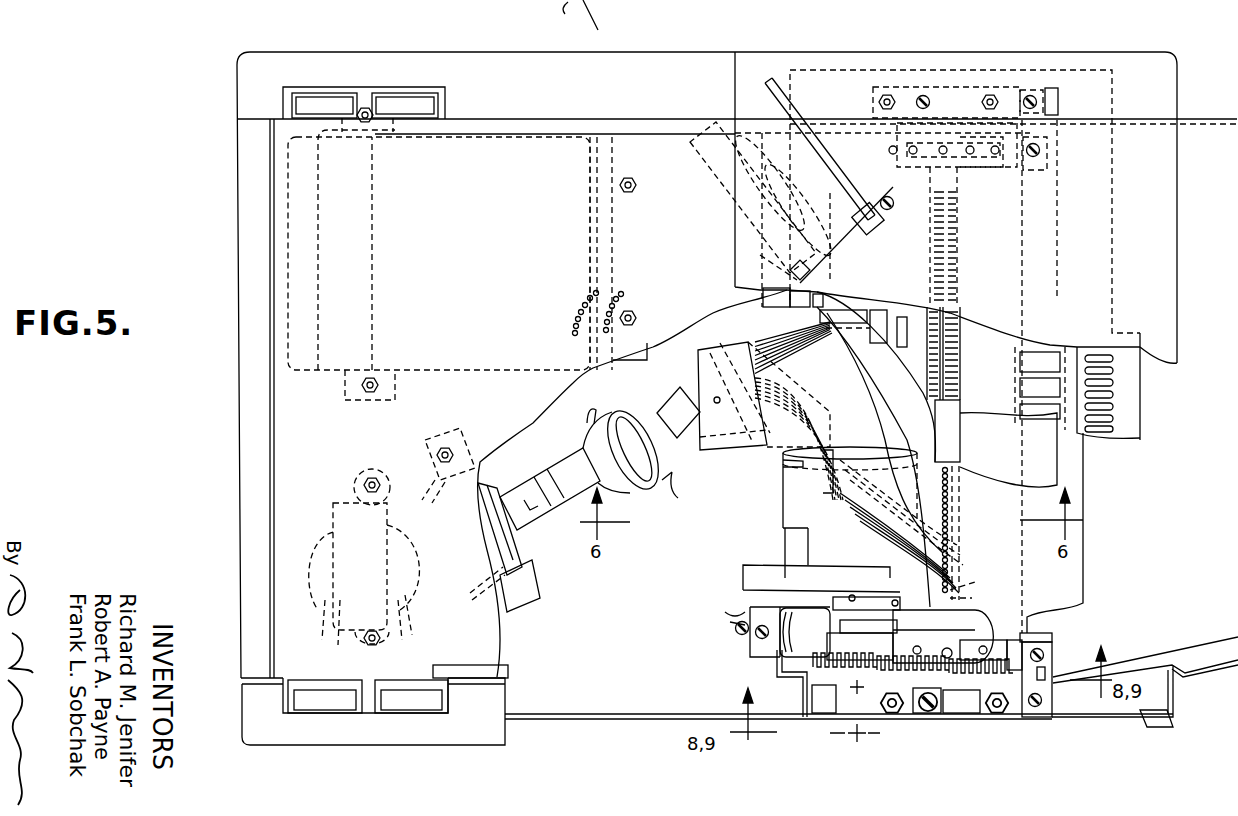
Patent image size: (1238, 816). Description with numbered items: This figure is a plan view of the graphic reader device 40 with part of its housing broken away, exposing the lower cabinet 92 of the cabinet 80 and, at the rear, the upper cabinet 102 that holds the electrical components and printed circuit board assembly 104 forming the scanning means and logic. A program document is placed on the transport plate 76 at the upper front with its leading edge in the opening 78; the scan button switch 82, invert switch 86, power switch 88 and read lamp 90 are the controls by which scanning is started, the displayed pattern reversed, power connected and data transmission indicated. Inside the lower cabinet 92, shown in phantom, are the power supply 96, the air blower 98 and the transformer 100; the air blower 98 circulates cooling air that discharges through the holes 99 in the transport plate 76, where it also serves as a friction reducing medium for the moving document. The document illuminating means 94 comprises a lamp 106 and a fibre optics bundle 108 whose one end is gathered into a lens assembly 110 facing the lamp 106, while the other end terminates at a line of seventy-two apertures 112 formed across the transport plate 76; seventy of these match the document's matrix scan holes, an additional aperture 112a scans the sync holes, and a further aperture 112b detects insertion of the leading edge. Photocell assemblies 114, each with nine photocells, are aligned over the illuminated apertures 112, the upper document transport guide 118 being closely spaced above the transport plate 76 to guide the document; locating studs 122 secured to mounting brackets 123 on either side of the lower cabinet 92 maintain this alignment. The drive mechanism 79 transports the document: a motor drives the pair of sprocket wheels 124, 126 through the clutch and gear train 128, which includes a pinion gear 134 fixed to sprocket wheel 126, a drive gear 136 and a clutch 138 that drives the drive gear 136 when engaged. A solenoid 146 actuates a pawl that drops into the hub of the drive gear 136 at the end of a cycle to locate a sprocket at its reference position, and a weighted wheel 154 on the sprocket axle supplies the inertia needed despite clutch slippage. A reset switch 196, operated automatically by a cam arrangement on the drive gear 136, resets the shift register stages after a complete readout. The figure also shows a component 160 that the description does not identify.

The graphic reader device 40 is at (569, 15).
The transport plate 76 is at (460, 310).
The opening 78 is at (748, 295).
The drive mechanism 79 is at (722, 588).
The cabinet 80 is at (648, 736).
The scan button switch 82 is at (342, 680).
The invert switch 86 is at (436, 93).
The power switch 88 is at (350, 93).
The read lamp 90 is at (421, 680).
The lower cabinet 92 is at (412, 734).
The document illuminating means 94 is at (682, 490).
The power supply 96 is at (490, 380).
The air blower 98 is at (716, 172).
The holes 99 is at (577, 297).
The transformer 100 is at (338, 497).
The upper cabinet 102 is at (1177, 74).
The printed circuit board assembly 104 is at (1136, 380).
The lamp 106 is at (569, 507).
The fibre optics bundle 108 is at (778, 420).
The lens assembly 110 is at (711, 396).
The apertures 112 is at (955, 498).
The additional aperture 112a is at (985, 578).
The further additional aperture 112b is at (983, 597).
The photocell assemblies 114 is at (960, 430).
The upper document transport guide 118 is at (755, 245).
The locating studs 122 is at (873, 92).
The mounting brackets 123 is at (1070, 90).
The sprocket wheel 124 is at (897, 160).
The sprocket wheel 126 is at (945, 638).
The clutch and gear train 128 is at (940, 718).
The pinion gear 134 is at (961, 703).
The drive gear 136 is at (842, 699).
The clutch 138 is at (873, 613).
The solenoid 146 is at (775, 655).
The weighted wheel 154 is at (862, 611).
The connector 160 is at (963, 172).
The reset switch 196 is at (832, 738).